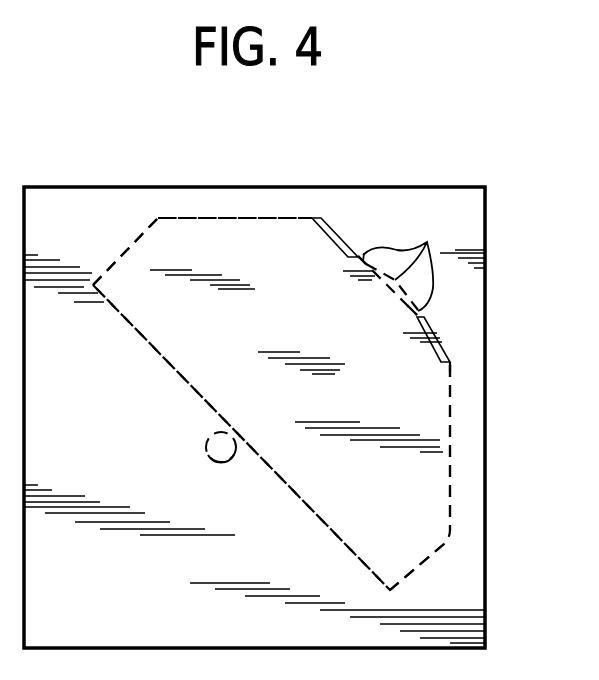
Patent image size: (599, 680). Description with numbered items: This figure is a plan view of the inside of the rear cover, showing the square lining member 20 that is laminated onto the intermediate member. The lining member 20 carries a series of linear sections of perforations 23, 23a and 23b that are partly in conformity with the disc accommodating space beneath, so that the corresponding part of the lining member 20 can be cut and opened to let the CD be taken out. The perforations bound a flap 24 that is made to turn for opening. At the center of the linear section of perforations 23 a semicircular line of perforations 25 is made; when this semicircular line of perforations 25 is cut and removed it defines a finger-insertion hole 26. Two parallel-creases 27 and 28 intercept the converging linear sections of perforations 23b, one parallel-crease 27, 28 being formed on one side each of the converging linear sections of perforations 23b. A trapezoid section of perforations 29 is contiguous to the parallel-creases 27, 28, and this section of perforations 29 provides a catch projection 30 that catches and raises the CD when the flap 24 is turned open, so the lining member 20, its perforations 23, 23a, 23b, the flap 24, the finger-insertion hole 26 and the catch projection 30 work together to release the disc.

The lining member 20 is at (473, 248).
The linear section of perforations 23 is at (182, 380).
The linear section of perforations 23a is at (128, 250).
The converging linear sections of perforations 23b is at (219, 218).
The flap 24 is at (340, 450).
The semicircular line of perforations 25 is at (213, 453).
The finger-insertion hole 26 is at (220, 463).
The parallel-crease 27 is at (324, 243).
The parallel-crease 28 is at (338, 240).
The trapezoid section of perforations 29 is at (427, 245).
The catch projection 30 is at (395, 280).